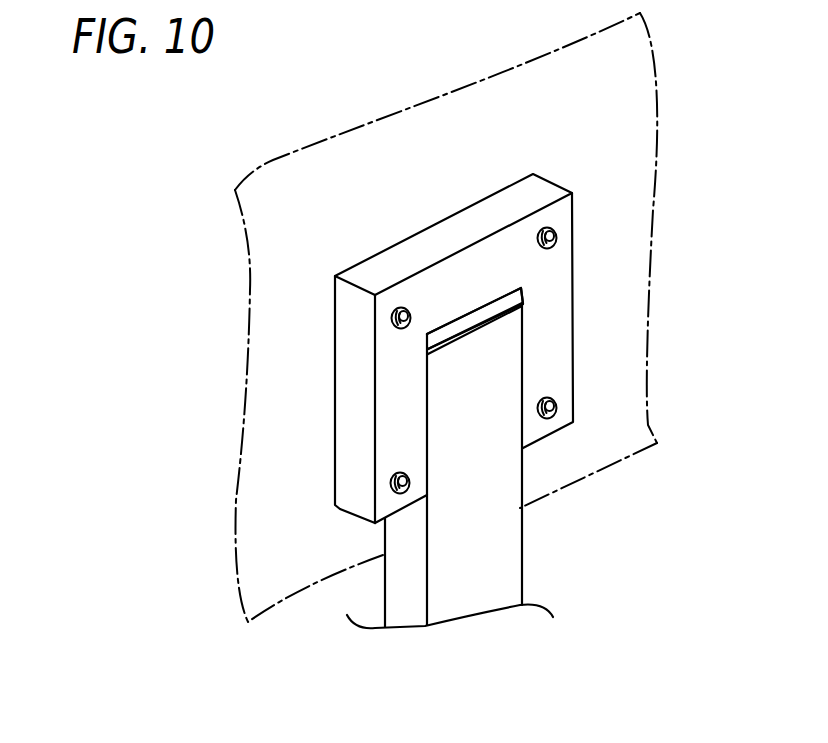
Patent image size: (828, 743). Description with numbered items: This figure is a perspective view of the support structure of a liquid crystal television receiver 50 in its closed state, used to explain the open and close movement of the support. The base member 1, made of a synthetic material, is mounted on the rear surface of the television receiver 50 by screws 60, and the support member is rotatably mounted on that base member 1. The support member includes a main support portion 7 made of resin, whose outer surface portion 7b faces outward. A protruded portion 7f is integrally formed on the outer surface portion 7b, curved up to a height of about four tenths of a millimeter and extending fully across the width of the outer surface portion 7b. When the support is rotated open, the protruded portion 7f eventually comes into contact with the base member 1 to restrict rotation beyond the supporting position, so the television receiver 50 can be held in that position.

The base member 1 is at (350, 402).
The main support portion 7 is at (490, 458).
The outer surface portion 7b is at (478, 513).
The protruded portion 7f is at (477, 325).
The liquid crystal television receiver 50 is at (250, 305).
The screws 60 is at (393, 313).